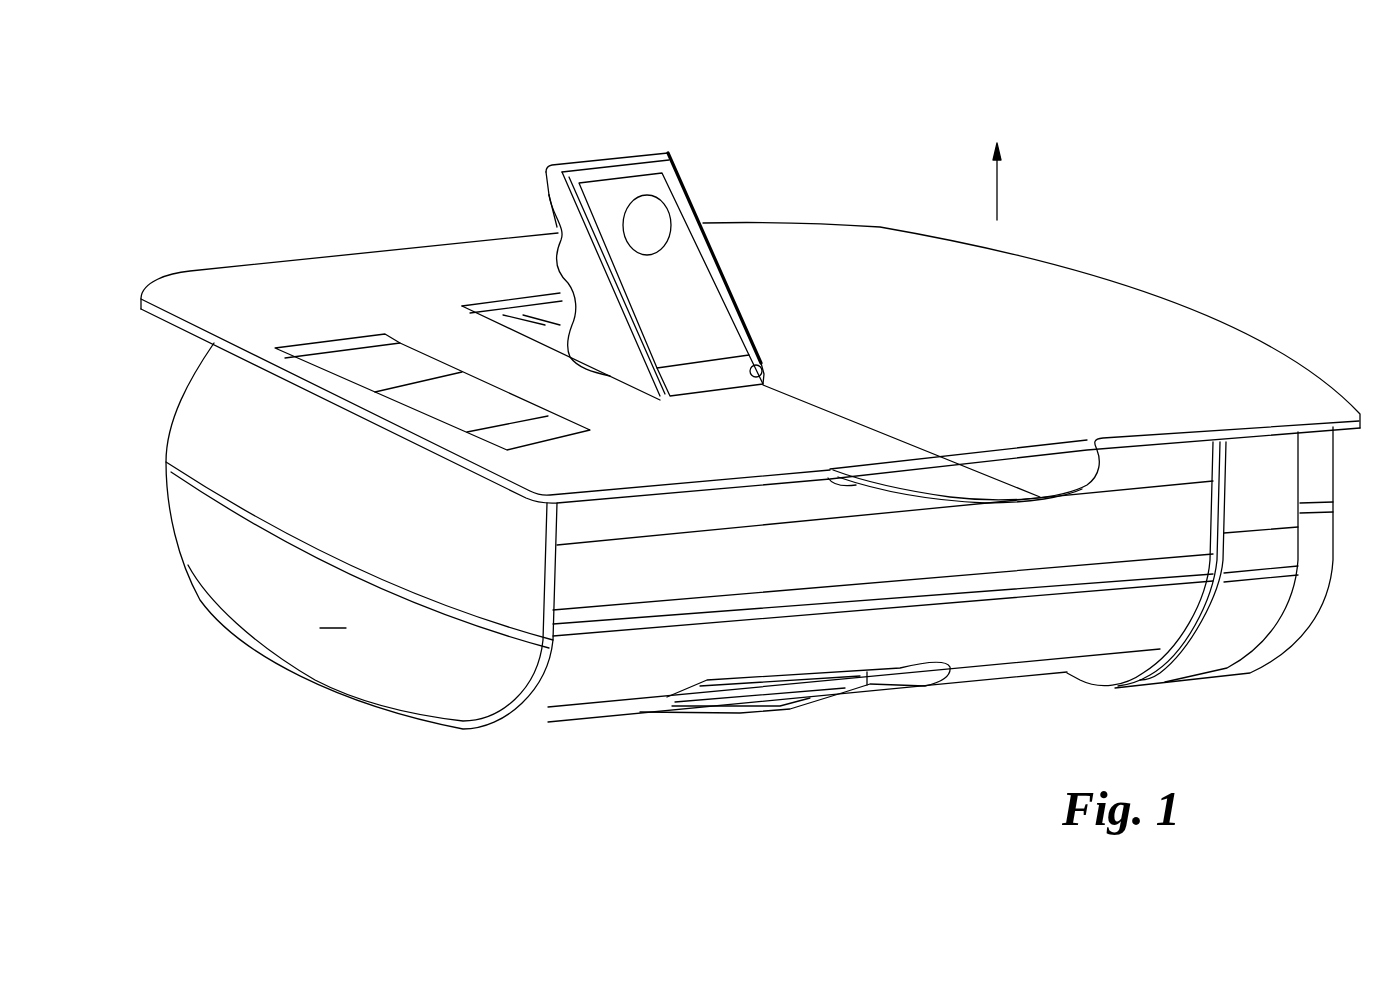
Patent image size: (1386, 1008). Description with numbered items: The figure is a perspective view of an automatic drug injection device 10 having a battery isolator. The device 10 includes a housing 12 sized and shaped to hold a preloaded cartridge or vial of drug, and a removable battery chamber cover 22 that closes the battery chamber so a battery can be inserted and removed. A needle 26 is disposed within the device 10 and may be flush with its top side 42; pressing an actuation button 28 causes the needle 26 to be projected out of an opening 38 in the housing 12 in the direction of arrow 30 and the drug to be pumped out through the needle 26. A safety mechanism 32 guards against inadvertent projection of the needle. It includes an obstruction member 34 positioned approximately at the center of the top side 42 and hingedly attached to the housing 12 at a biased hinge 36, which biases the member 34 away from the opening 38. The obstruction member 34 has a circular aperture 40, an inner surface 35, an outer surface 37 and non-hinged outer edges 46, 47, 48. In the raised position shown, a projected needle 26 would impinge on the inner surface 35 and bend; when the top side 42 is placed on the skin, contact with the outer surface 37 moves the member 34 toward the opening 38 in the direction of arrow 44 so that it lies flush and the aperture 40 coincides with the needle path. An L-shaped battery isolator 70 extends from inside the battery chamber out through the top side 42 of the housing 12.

The automatic drug injection device 10 is at (315, 748).
The housing 12 is at (587, 670).
The battery chamber cover 22 is at (361, 536).
The needle 26 is at (557, 323).
The actuation button 28 is at (747, 713).
The arrow 30 is at (997, 187).
The safety mechanism 32 is at (568, 130).
The obstruction member 34 is at (546, 166).
The inner surface 35 is at (518, 178).
The biased hinge 36 is at (727, 372).
The outer surface 37 is at (664, 270).
The opening 38 is at (543, 322).
The circular aperture 40 is at (672, 222).
The top side 42 is at (1180, 250).
The arrow 44 is at (1090, 222).
The non-hinged outer edge 46 is at (623, 355).
The non-hinged outer edge 47 is at (612, 156).
The non-hinged outer edge 48 is at (745, 313).
The L-shaped battery isolator 70 is at (363, 358).